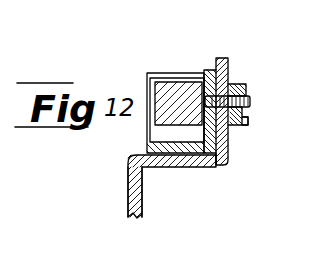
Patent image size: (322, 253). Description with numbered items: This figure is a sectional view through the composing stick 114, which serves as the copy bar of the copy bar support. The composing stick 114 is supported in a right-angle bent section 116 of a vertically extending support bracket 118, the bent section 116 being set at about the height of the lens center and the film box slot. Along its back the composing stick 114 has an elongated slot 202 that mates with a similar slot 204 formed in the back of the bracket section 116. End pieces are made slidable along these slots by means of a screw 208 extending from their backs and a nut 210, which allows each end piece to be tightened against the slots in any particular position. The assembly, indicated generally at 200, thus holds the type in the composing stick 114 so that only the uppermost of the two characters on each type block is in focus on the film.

The housing 200 is at (148, 75).
The elongated slot 202 is at (200, 79).
The composing stick 114 is at (216, 68).
The right-angle bent section 116 is at (218, 168).
The support bracket 118 is at (142, 199).
The slot 204 is at (233, 88).
The screw 208 is at (253, 101).
The nut 210 is at (248, 124).